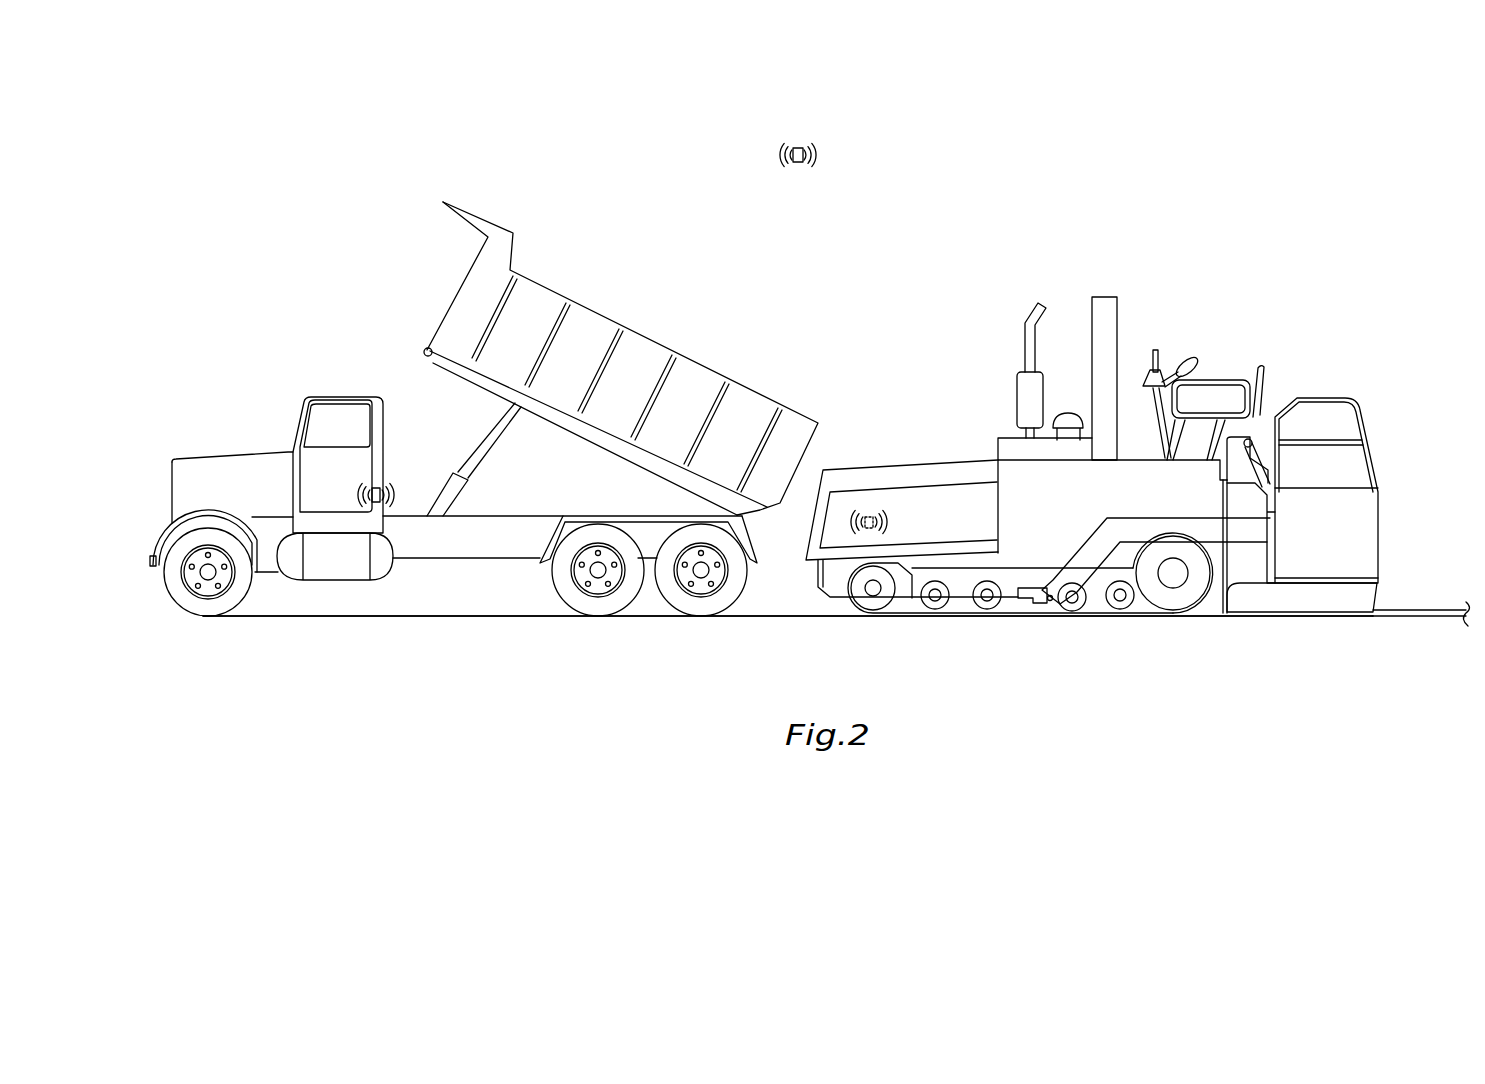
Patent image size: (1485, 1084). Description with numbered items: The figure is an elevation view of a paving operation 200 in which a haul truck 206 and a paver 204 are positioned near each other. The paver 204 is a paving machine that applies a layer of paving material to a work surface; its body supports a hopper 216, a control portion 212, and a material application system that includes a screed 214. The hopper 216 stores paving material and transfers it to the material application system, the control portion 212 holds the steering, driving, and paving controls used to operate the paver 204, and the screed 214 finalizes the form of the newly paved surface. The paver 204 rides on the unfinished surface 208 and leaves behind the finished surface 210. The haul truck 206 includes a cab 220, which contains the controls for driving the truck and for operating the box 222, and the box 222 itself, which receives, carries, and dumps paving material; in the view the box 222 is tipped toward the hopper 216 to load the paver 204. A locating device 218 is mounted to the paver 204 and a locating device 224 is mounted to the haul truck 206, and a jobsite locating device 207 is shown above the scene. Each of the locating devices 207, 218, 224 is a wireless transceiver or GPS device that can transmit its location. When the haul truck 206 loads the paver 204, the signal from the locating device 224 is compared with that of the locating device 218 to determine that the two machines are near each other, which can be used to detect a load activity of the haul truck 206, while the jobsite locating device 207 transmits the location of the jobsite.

The paving operation 200 is at (185, 178).
The paver 204 is at (1065, 248).
The haul truck 206 is at (185, 418).
The jobsite locating device 207 is at (801, 148).
The unfinished surface 208 is at (427, 618).
The finished surface 210 is at (1423, 619).
The control portion 212 is at (1213, 360).
The screed 214 is at (1312, 613).
The hopper 216 is at (850, 470).
The locating device 218 is at (867, 515).
The cab 220 is at (246, 455).
The box 222 is at (598, 325).
The locating device 224 is at (382, 488).